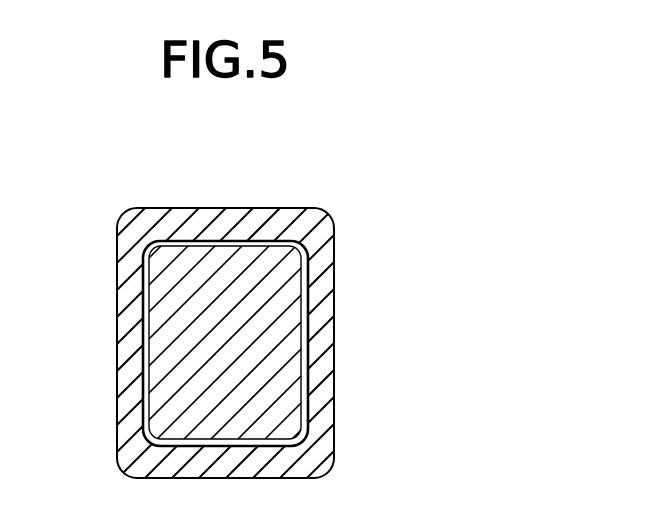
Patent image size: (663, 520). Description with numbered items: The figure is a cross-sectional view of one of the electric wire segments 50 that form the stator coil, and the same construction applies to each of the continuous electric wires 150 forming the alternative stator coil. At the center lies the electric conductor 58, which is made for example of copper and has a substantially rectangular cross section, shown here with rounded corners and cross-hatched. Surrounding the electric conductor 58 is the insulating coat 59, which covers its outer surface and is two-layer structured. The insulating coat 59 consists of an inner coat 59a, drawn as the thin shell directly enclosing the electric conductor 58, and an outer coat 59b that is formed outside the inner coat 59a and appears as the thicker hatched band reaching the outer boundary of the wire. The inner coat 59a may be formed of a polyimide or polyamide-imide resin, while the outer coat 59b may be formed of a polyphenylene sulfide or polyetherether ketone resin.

The electric wire segment 50 is at (303, 298).
The continuous electric wire 150 is at (303, 337).
The electric conductor 58 is at (265, 375).
The insulating coat 59 is at (303, 337).
The inner coat 59a is at (309, 281).
The outer coat 59b is at (333, 232).